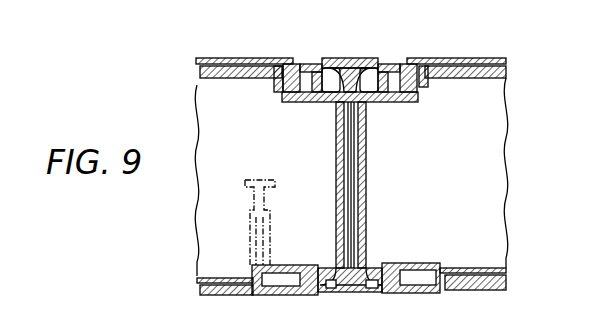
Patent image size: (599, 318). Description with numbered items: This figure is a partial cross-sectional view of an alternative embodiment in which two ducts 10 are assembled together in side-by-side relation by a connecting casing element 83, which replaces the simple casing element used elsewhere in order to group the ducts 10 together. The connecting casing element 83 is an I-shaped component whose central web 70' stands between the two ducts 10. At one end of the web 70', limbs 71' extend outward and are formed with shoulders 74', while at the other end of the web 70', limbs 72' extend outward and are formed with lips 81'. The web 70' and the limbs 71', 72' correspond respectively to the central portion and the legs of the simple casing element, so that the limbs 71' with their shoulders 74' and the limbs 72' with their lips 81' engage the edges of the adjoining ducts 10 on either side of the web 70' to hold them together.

The duct 10 is at (187, 117).
The connecting casing element 83 is at (356, 58).
The limbs 71' is at (353, 58).
The shoulders 74' is at (350, 118).
The web 70' is at (379, 185).
The lips 81' is at (346, 259).
The limbs 72' is at (339, 293).